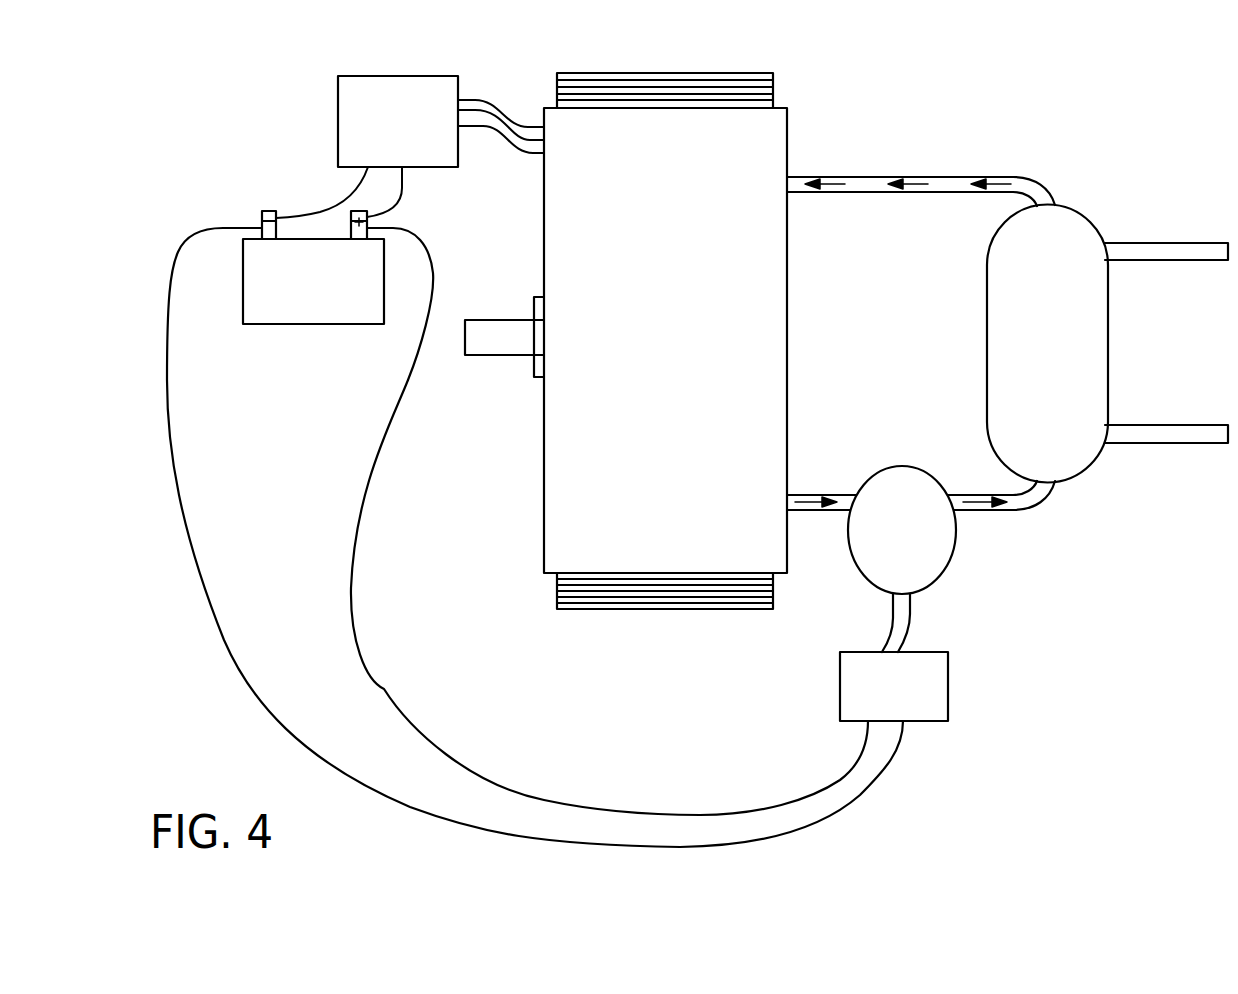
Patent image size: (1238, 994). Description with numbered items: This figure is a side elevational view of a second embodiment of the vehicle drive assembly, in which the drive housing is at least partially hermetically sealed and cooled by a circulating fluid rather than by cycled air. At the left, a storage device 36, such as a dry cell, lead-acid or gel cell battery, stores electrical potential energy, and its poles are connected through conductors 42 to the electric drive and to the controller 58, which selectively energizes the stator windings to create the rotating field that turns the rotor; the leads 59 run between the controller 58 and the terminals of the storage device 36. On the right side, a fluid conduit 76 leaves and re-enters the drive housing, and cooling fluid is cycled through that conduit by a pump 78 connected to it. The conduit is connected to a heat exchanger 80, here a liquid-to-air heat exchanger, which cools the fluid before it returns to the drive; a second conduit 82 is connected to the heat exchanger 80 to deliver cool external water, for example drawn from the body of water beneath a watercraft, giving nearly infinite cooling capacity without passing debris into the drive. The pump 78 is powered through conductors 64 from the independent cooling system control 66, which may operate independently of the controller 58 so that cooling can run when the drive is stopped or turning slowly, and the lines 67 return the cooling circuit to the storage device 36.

The storage device 36 is at (303, 325).
The conductors 42 is at (477, 98).
The controller 58 is at (415, 133).
The battery cables 59 is at (340, 203).
The conductors 64 is at (890, 623).
The independent cooling system control 66 is at (948, 680).
The coolant hoses 67 is at (328, 760).
The fluid conduit 76 is at (932, 193).
The pump 78 is at (920, 538).
The heat exchanger 80 is at (1029, 357).
The second conduit 82 is at (1168, 241).